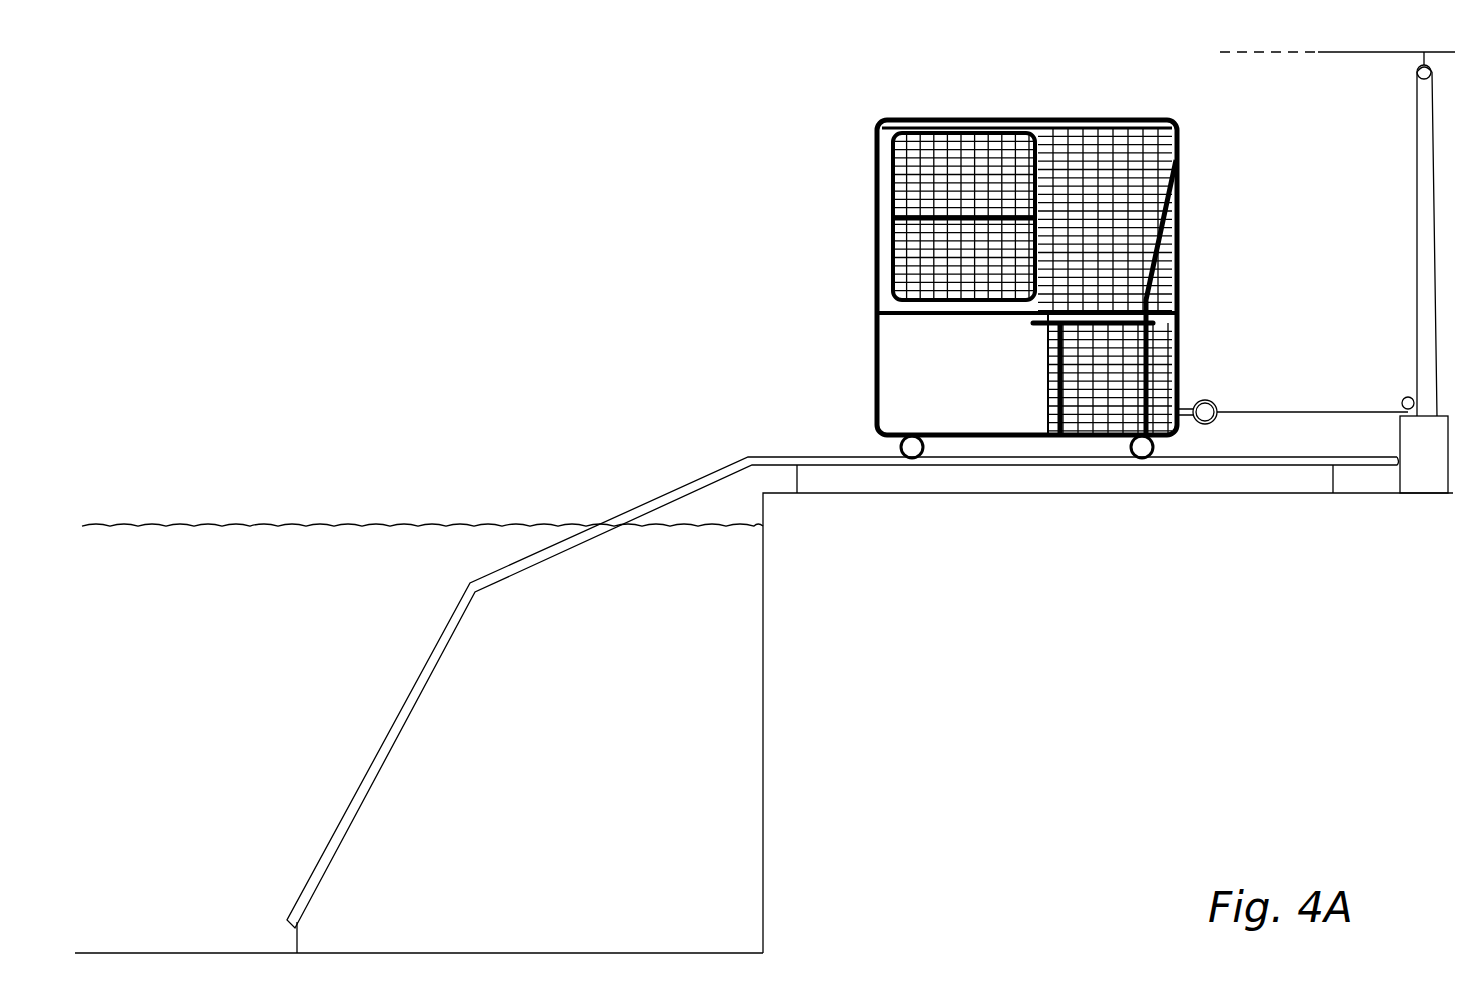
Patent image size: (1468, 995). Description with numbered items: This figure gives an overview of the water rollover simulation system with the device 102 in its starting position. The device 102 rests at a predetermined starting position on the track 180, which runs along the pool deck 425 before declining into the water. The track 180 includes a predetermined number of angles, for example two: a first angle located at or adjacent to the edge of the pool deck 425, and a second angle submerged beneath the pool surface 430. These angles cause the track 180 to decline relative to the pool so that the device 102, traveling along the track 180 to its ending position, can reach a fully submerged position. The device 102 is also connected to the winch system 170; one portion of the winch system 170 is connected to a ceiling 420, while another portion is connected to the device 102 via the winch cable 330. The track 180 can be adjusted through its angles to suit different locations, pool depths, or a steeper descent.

The device 102 is at (877, 168).
The track 180 is at (772, 455).
The pool deck 425 is at (950, 493).
The pool surface 430 is at (198, 523).
The ceiling 420 is at (1333, 53).
The winch system 170 is at (1418, 433).
The winch cable 330 is at (1248, 412).